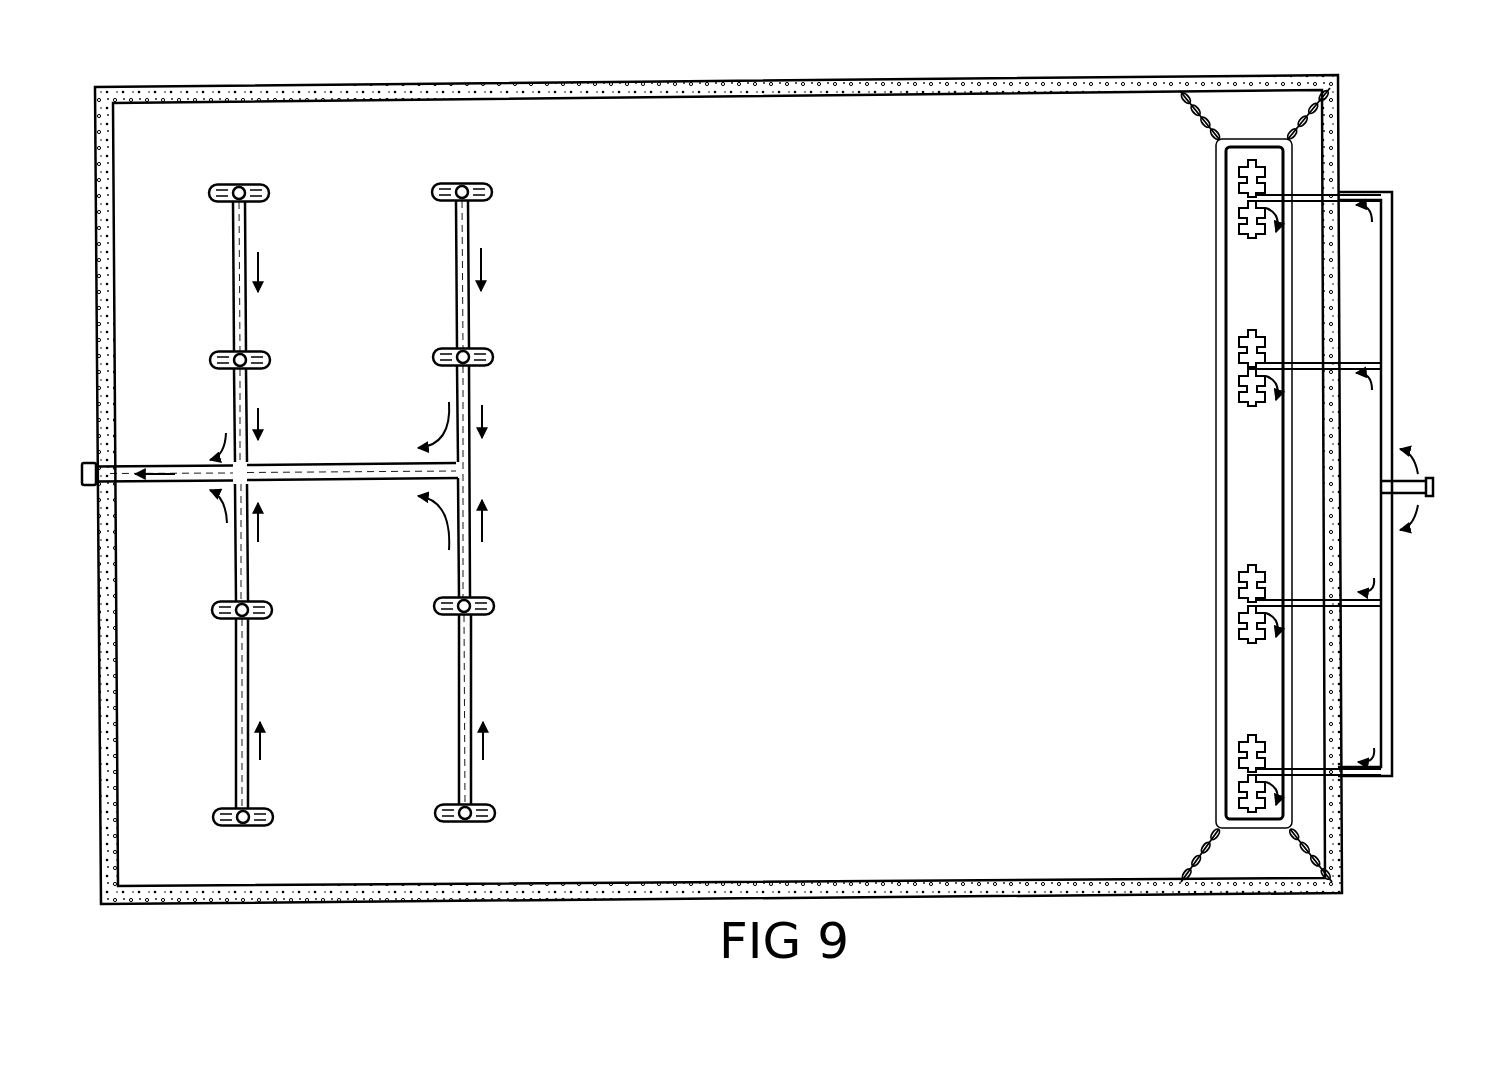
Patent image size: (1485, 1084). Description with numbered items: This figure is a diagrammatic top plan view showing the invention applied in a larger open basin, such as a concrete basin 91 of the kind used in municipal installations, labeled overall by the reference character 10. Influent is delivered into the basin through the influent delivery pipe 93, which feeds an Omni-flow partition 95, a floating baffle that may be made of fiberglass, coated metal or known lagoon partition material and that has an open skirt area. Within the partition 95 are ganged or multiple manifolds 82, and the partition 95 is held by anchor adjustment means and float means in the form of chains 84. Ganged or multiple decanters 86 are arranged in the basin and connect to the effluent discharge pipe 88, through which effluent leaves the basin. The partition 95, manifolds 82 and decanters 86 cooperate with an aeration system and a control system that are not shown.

The tank 10 is at (95, 290).
The ganged or multiple manifolds 82 is at (1253, 237).
The chains 84 is at (1300, 112).
The ganged or multiple decanters 86 is at (432, 196).
The effluent discharge pipe 88 is at (199, 476).
The concrete basin 91 is at (766, 517).
The influent delivery pipe 93 is at (1430, 488).
The Omni-flow partition 95 is at (1214, 463).